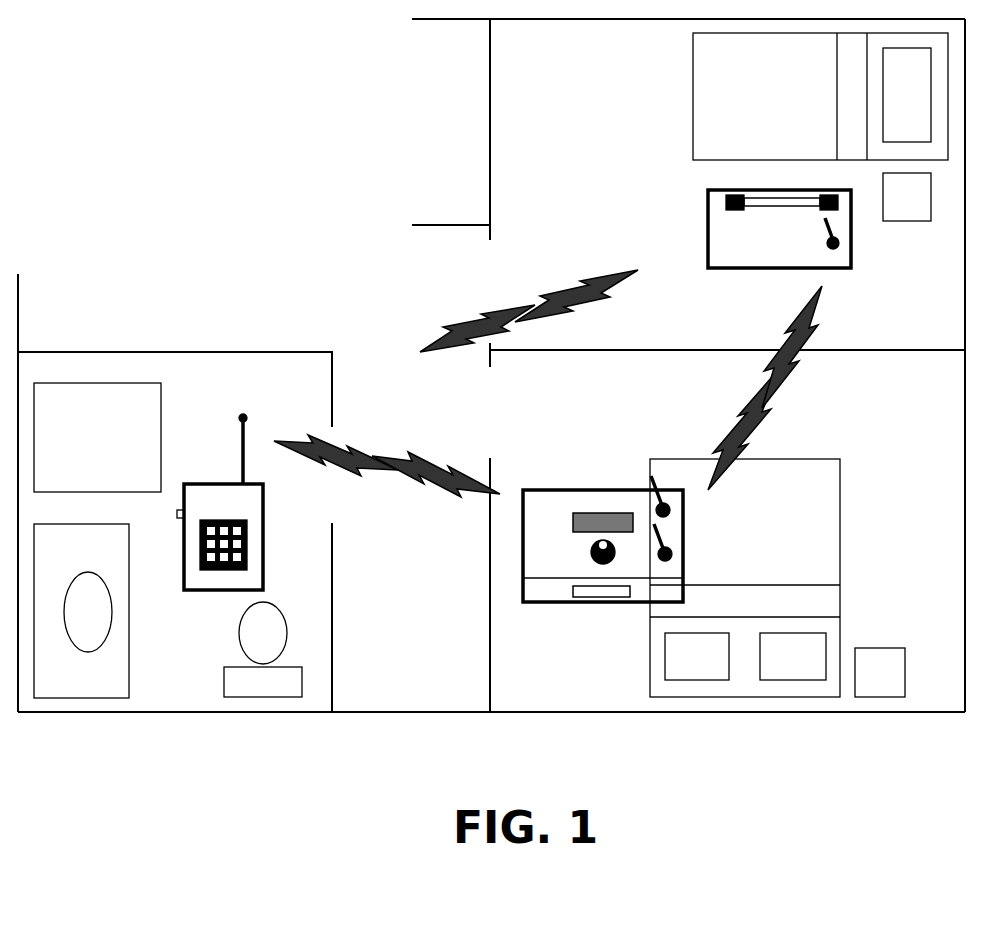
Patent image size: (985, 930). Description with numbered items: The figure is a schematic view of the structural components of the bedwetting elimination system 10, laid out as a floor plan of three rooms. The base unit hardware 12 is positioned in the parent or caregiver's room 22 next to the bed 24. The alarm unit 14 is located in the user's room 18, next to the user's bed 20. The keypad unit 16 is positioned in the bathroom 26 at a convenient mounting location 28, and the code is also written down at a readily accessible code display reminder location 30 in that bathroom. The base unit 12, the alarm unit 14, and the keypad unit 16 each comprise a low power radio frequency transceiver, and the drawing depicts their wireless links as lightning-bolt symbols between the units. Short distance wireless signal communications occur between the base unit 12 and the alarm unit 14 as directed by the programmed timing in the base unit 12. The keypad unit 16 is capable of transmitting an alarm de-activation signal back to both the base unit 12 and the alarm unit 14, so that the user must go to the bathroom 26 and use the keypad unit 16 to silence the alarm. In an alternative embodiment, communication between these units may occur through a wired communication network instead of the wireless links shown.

The bedwetting elimination system 10 is at (294, 206).
The base unit hardware 12 is at (539, 590).
The alarm unit 14 is at (721, 240).
The keypad unit 16 is at (204, 497).
The user's room 18 is at (578, 74).
The user's bed 20 is at (770, 111).
The parent or caregiver's room 22 is at (907, 475).
The bed 24 is at (780, 558).
The bathroom 26 is at (202, 646).
The mounting location 28 is at (72, 562).
The code display reminder location 30 is at (181, 708).